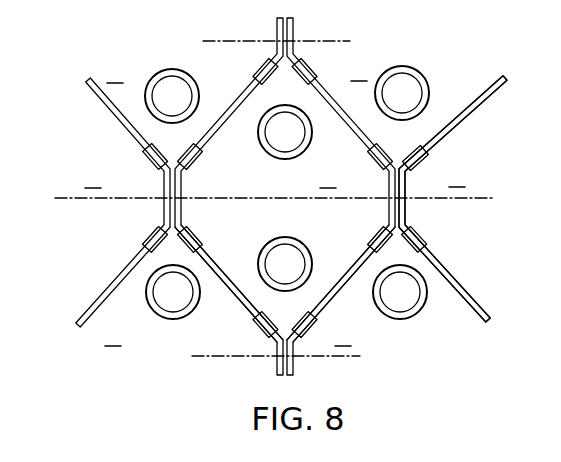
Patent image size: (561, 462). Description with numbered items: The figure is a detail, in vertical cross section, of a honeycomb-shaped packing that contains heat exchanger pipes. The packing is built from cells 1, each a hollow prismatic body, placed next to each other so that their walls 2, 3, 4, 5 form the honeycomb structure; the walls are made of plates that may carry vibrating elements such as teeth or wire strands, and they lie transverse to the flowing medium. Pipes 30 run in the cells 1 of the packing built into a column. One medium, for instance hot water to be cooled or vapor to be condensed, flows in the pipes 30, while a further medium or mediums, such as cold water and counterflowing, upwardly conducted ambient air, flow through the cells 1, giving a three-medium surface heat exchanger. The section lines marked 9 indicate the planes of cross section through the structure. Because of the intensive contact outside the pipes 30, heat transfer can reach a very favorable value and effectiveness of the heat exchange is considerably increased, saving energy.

The cell 1 is at (275, 202).
The cell wall 2 is at (346, 120).
The cell wall 3 is at (349, 263).
The cell wall 4 is at (246, 308).
The cell wall 5 is at (240, 100).
The section line 9 is at (219, 42).
The pipe 30 is at (163, 70).